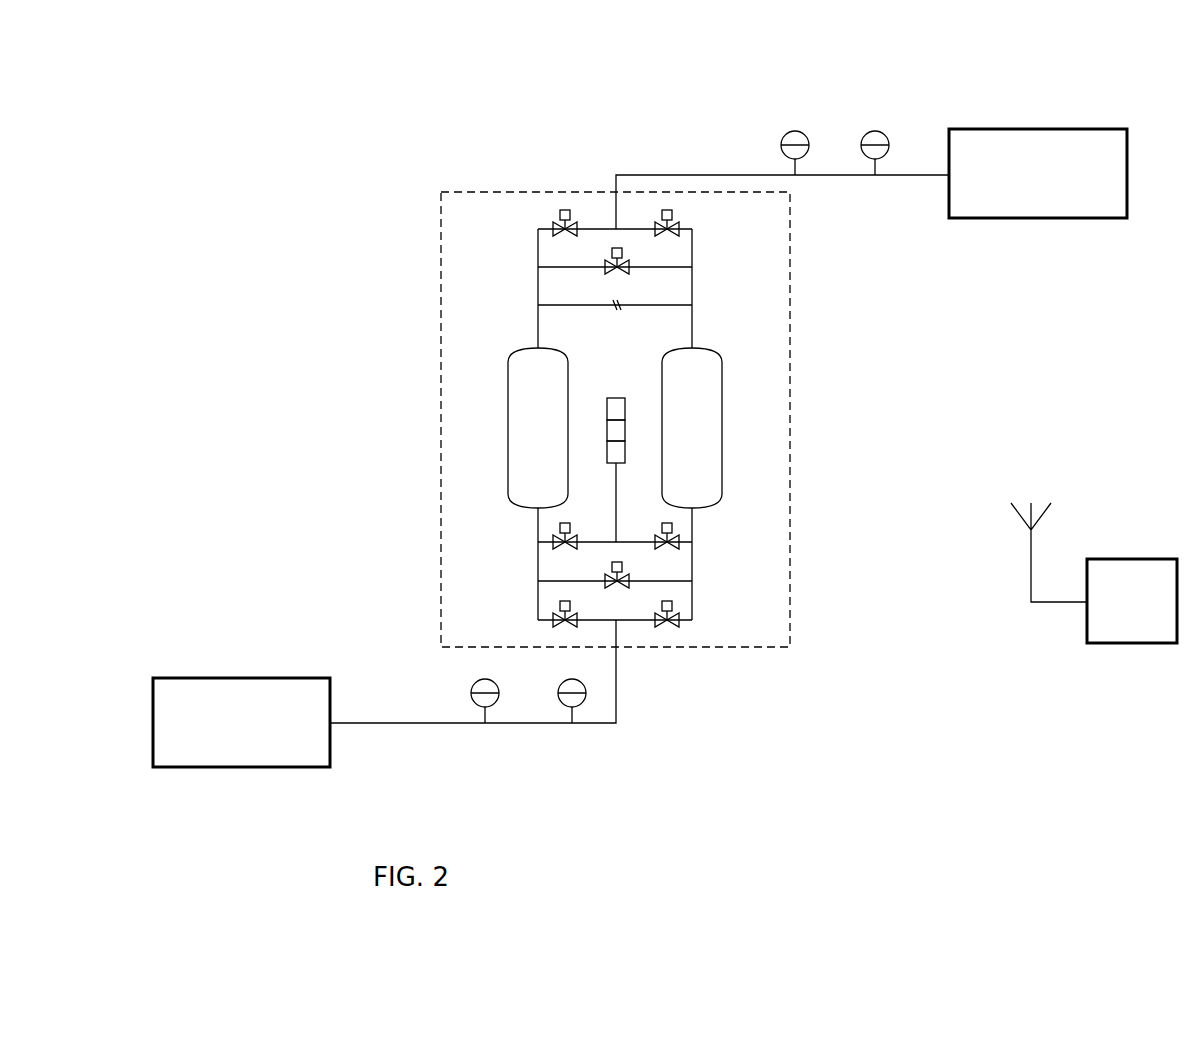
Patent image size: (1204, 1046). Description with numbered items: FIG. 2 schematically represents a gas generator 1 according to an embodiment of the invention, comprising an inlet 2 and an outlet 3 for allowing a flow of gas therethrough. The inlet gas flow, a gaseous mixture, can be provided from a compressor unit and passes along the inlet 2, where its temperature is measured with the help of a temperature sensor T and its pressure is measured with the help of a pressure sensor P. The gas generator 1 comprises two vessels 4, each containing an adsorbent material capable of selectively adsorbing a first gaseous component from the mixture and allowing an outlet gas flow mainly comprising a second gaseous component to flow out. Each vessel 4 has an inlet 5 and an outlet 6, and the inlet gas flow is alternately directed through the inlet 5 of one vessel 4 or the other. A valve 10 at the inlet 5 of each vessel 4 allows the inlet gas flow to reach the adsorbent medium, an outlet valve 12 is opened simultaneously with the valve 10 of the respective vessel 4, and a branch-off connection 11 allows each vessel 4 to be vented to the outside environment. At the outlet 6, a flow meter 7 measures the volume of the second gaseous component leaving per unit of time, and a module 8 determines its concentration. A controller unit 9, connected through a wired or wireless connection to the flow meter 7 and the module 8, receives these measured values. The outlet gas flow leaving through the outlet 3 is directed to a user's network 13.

The gas generator 1 is at (400, 207).
The inlet 2 is at (430, 722).
The outlet 3 is at (893, 182).
The vessel 4 is at (547, 433).
The inlet of vessel 5 is at (698, 520).
The outlet of vessel 6 is at (540, 333).
The flow meter 7 is at (862, 122).
The module for determining concentration 8 is at (783, 133).
The controller unit 9 is at (1122, 653).
The valve 10 is at (572, 632).
The branch-off connection 11 is at (660, 527).
The outlet valve 12 is at (553, 218).
The user's network 13 is at (1043, 223).
The pressure sensor P is at (505, 697).
The temperature sensor T is at (595, 697).